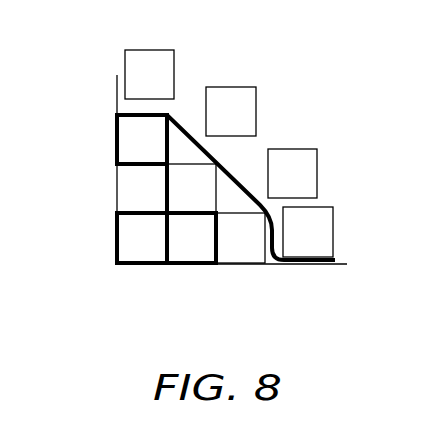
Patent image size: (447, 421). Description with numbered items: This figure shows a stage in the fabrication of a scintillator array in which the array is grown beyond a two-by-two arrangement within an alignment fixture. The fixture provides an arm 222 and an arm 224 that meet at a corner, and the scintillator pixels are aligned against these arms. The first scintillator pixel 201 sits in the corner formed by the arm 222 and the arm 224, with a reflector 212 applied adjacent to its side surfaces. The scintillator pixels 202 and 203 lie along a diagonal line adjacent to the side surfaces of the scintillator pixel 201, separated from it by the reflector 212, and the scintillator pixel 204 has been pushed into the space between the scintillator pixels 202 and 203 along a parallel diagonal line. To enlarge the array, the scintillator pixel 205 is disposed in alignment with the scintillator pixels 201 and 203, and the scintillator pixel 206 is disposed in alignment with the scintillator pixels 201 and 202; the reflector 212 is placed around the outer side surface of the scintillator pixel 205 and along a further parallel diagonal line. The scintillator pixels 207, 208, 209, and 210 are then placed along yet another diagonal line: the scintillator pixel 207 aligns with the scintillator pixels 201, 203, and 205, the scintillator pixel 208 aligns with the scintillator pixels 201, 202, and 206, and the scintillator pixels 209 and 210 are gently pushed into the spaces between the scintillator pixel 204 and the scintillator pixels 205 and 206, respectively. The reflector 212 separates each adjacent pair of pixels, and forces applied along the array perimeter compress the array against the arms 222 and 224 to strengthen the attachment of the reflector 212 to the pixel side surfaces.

The scintillator pixel 201 is at (120, 243).
The scintillator pixel 202 is at (190, 255).
The scintillator pixel 203 is at (120, 197).
The scintillator pixel 204 is at (205, 178).
The scintillator pixel 205 is at (120, 143).
The scintillator pixel 206 is at (242, 253).
The scintillator pixel 207 is at (163, 62).
The scintillator pixel 208 is at (325, 232).
The scintillator pixel 209 is at (243, 105).
The scintillator pixel 210 is at (303, 173).
The reflector 212 is at (333, 260).
The arm 222 is at (342, 265).
The arm 224 is at (115, 93).